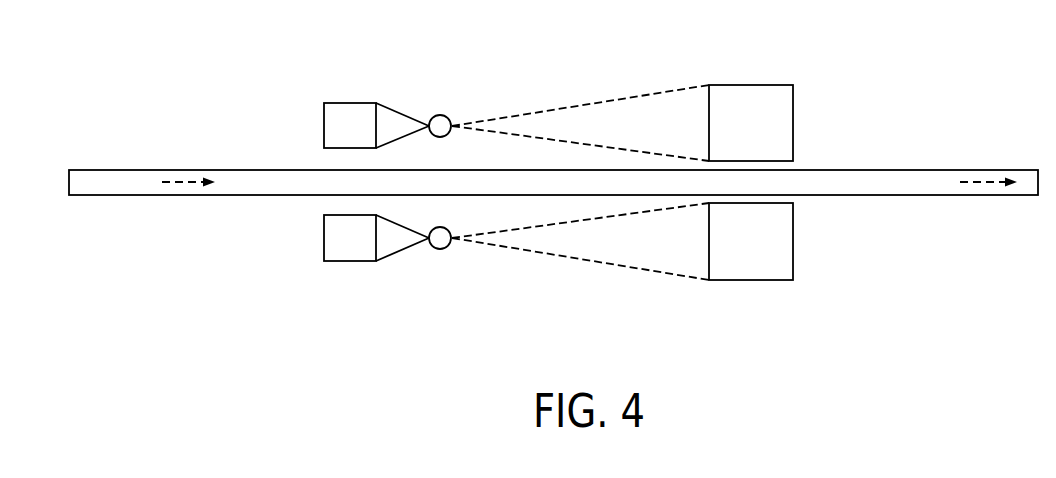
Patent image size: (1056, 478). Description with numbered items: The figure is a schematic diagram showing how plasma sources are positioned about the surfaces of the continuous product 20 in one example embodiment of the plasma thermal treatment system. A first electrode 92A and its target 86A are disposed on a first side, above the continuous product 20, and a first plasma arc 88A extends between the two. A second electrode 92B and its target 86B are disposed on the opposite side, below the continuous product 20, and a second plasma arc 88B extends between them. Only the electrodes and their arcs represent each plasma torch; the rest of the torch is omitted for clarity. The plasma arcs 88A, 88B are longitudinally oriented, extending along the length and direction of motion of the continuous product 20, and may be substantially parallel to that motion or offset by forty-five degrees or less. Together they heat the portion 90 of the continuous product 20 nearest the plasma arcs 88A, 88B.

The continuous product 20 is at (116, 180).
The first electrode 92A is at (385, 107).
The second electrode 92B is at (388, 258).
The first plasma arc 88A is at (628, 122).
The second plasma arc 88B is at (627, 243).
The target 86A is at (793, 125).
The target 86B is at (793, 240).
The portion 90 is at (528, 205).